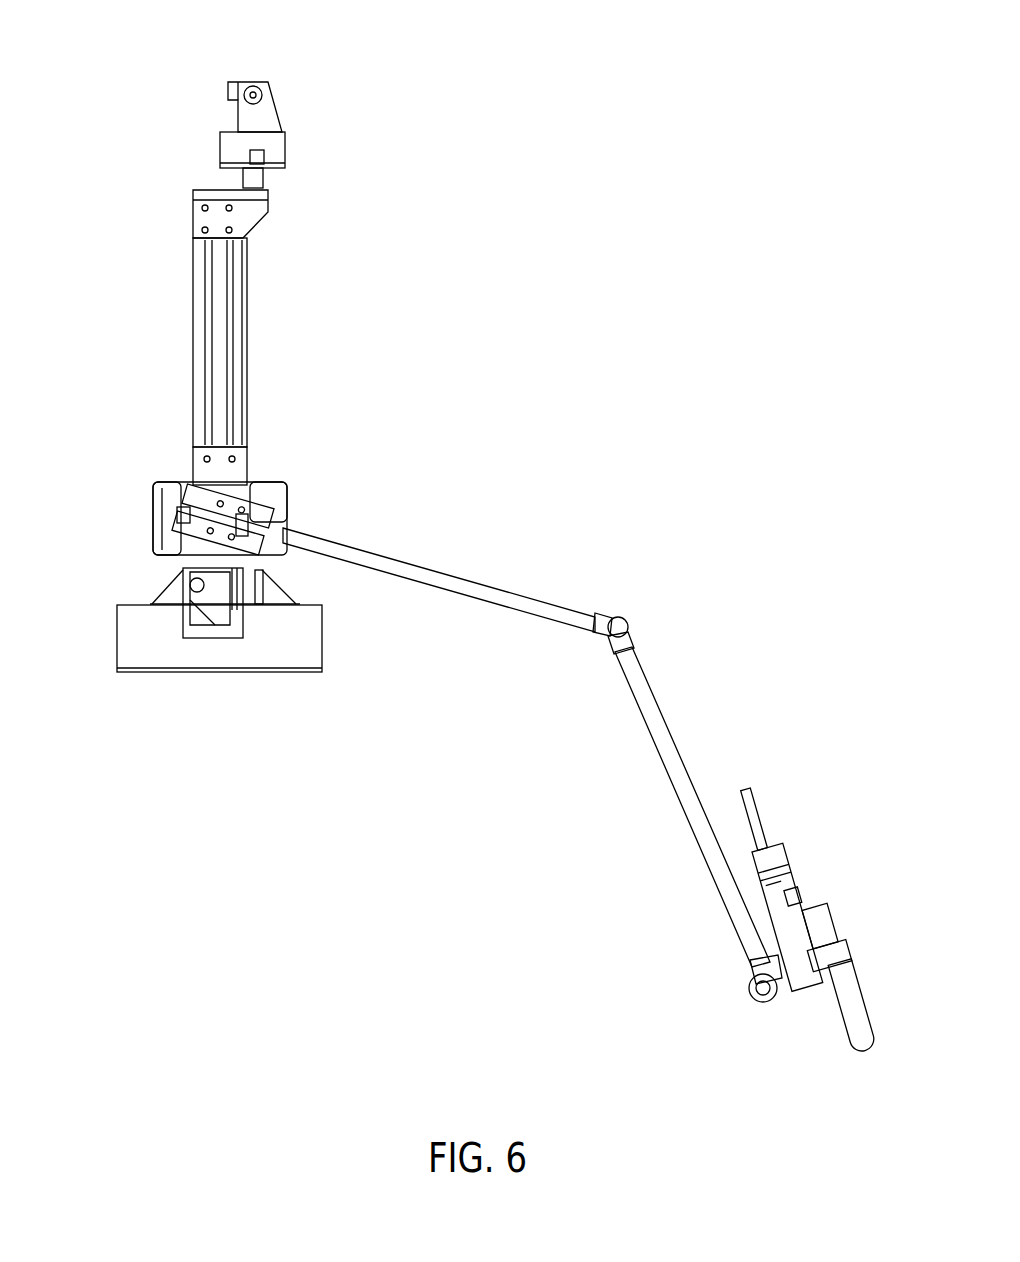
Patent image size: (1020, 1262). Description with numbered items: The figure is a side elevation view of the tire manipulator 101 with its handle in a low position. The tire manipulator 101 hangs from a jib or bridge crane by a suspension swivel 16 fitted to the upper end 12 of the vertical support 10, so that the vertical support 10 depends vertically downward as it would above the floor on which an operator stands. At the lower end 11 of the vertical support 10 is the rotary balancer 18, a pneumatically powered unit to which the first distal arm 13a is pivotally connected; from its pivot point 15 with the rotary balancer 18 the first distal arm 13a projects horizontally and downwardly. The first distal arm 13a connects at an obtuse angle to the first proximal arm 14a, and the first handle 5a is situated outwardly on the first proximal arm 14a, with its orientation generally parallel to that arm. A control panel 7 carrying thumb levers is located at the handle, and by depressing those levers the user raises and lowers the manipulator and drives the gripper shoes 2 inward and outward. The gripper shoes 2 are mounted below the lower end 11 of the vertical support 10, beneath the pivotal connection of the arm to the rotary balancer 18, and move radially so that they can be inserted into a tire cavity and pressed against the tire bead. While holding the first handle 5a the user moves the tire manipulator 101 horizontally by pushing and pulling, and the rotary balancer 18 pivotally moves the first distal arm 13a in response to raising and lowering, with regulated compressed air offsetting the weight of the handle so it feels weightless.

The tire manipulator 101 is at (448, 103).
The suspension swivel 16 is at (232, 98).
The vertical support 10 is at (220, 337).
The upper end 12 is at (247, 272).
The lower end 11 is at (247, 421).
The pivot point 15 is at (195, 482).
The rotary balancer 18 is at (157, 527).
The gripper shoes 2 is at (130, 640).
The first distal arm 13a is at (465, 565).
The first proximal arm 14a is at (672, 722).
The control panel 7 is at (797, 898).
The first handle 5a is at (852, 1020).